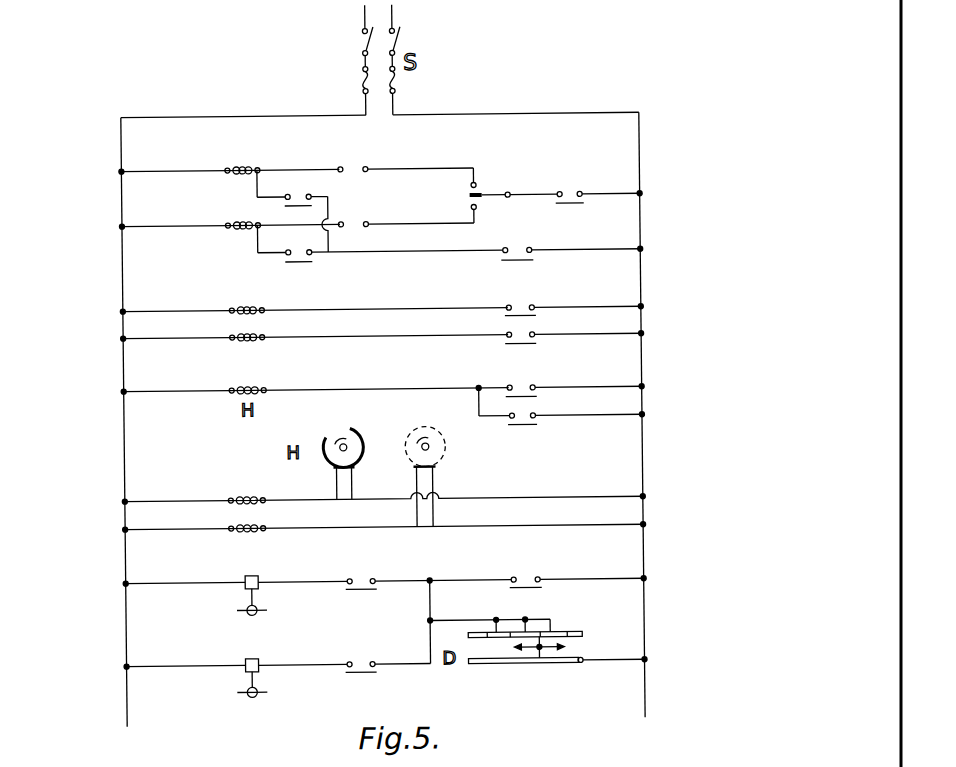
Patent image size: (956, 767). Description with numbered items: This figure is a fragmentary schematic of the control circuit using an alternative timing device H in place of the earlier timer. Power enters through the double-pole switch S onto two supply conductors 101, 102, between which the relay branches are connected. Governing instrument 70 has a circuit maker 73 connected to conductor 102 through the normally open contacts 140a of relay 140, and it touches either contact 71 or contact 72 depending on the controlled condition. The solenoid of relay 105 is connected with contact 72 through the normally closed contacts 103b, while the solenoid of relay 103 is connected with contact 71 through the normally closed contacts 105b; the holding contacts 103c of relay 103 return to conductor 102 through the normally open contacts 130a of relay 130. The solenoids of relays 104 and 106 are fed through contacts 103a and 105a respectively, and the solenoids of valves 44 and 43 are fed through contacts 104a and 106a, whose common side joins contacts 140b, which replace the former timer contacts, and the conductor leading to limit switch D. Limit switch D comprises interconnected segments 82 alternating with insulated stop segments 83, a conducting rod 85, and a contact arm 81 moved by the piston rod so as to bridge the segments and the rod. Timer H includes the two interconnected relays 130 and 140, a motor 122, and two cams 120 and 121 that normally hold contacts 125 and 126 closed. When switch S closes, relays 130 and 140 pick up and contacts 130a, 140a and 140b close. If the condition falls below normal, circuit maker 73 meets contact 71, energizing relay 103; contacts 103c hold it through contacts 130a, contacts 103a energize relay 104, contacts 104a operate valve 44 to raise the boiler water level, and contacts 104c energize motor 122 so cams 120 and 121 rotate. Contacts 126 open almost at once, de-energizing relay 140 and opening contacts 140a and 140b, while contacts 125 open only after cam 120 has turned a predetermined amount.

The conductor 101 is at (247, 410).
The conductor 102 is at (519, 406).
The relay 103 is at (229, 216).
The contacts 103a is at (574, 299).
The contacts 103b is at (406, 158).
The contacts 103c is at (292, 230).
The relay 104 is at (314, 300).
The contacts 104a is at (426, 574).
The contacts 104c is at (574, 379).
The relay 105 is at (229, 160).
The contacts 105a is at (574, 348).
The contacts 105b is at (406, 213).
The relay 106 is at (314, 328).
The contacts 106a is at (387, 626).
The governing instrument 70 is at (486, 167).
The contact 71 is at (480, 211).
The contact 72 is at (484, 184).
The circuit maker 73 is at (463, 196).
The contacts 140a is at (576, 186).
The contacts 130a is at (476, 243).
The motor 122 is at (315, 381).
The circuit making cam 120 is at (358, 434).
The circuit making cam 121 is at (446, 454).
The contacts 125 is at (359, 483).
The contacts 126 is at (440, 496).
The relay 130 is at (383, 490).
The relay 140 is at (383, 518).
The contacts 140b is at (575, 570).
The valve 44 is at (235, 586).
The valve 43 is at (236, 668).
The stop segments 83 is at (538, 635).
The segments 82 is at (556, 634).
The contact arm 81 is at (543, 666).
The conducting rod 85 is at (475, 666).